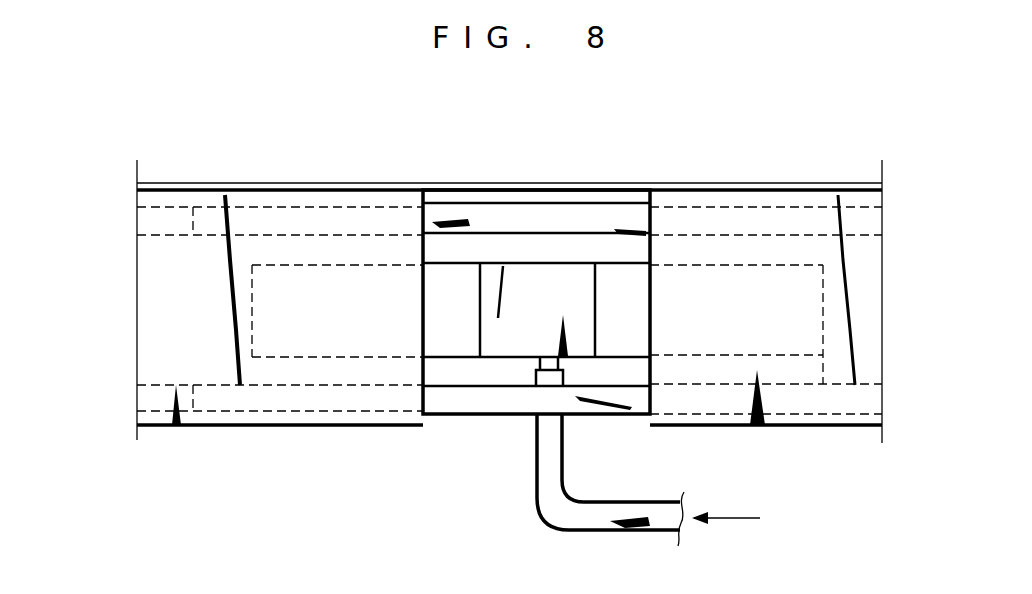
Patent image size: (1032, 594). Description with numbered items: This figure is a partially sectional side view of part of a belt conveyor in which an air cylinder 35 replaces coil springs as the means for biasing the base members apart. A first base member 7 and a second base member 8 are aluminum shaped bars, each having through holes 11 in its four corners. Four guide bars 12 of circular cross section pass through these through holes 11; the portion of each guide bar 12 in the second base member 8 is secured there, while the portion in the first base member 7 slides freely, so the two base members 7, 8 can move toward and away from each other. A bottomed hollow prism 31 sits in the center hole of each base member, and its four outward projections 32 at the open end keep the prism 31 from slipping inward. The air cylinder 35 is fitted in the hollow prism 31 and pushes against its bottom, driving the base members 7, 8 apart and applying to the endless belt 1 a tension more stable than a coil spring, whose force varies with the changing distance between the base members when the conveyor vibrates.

The endless belt 1 is at (422, 188).
The first base member 7 is at (700, 427).
The second base member 8 is at (193, 412).
The through holes 11 is at (299, 207).
The guide bars 12 is at (557, 220).
The hollow square prism 31 is at (822, 250).
The projections 32 is at (423, 340).
The air cylinder 35 is at (467, 338).